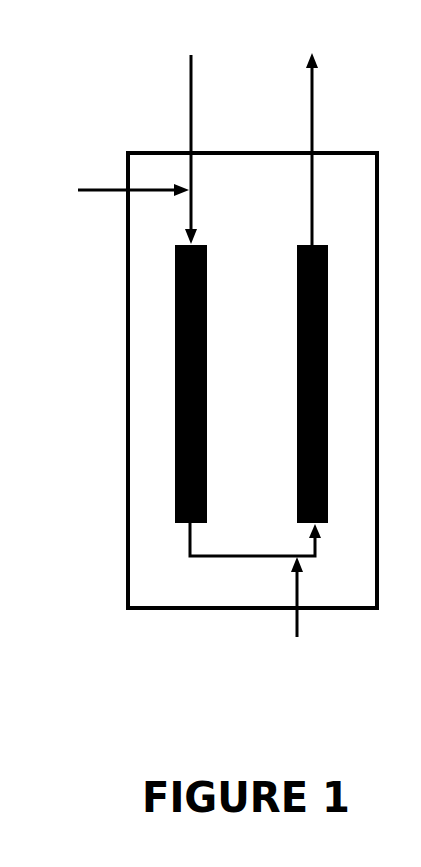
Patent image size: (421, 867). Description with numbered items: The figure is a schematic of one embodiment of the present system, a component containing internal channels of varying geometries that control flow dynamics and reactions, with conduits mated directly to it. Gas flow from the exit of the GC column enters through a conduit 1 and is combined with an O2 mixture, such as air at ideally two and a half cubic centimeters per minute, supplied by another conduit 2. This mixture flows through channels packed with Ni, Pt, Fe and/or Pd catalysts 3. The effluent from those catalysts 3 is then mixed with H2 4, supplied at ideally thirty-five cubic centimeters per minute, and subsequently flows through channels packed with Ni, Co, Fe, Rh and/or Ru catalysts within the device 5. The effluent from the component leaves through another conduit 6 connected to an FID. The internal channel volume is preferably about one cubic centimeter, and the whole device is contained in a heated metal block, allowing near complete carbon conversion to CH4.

The conduit 1 is at (195, 129).
The conduit 2 is at (111, 195).
The channels packed with Ni, Pt, Fe and/or Pd catalysts 3 is at (170, 384).
The H2 supply 4 is at (298, 623).
The channels packed with Ni, Co, Fe, Rh and/or Ru catalysts 5 is at (336, 384).
The conduit 6 is at (313, 130).